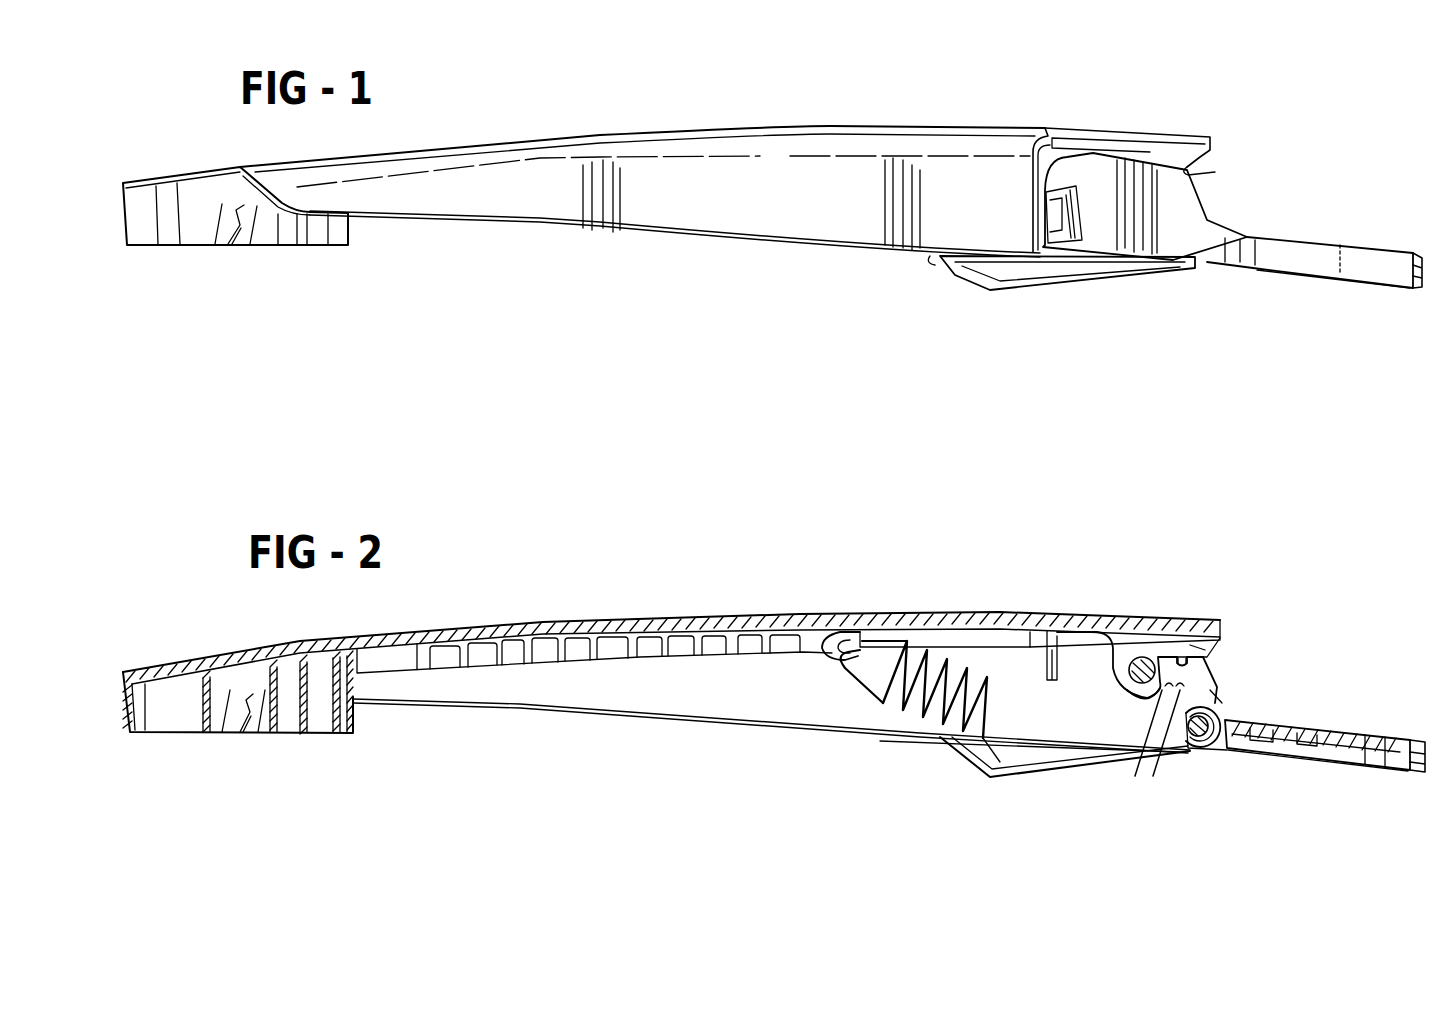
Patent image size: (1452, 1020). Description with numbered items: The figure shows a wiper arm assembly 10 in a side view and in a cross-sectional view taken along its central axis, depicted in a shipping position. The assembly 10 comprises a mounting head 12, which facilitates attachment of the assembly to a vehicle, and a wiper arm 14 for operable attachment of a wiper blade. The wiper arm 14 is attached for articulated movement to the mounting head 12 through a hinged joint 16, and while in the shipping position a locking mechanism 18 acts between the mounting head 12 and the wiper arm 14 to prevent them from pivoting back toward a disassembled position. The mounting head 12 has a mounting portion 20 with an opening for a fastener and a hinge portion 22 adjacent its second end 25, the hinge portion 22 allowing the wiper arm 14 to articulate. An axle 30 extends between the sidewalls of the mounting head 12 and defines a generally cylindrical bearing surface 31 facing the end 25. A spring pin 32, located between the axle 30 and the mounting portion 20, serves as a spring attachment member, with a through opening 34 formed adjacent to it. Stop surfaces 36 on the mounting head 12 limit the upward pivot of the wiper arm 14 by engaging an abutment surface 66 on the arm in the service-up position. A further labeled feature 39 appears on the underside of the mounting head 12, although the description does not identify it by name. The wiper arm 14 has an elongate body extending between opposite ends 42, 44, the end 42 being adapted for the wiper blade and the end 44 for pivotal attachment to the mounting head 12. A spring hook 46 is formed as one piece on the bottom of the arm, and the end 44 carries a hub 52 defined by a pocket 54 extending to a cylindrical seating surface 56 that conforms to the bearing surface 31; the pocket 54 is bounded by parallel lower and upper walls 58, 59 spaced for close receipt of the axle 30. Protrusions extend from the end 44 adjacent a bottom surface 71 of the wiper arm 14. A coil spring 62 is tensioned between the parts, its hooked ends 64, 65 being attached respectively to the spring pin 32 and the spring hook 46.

In FIG. 1, the wiper arm assembly 10 is at (933, 82).
In FIG. 2, the wiper arm assembly 10 is at (836, 566).
In FIG. 1, the mounting head 12 is at (1412, 254).
In FIG. 2, the mounting head 12 is at (1420, 740).
In FIG. 1, the wiper arm 14 is at (826, 125).
In FIG. 2, the wiper arm 14 is at (720, 621).
In FIG. 1, the hinged joint 16 is at (1090, 122).
In FIG. 2, the hinged joint 16 is at (1160, 600).
In FIG. 2, the locking mechanism 18 is at (1223, 745).
In FIG. 1, the mounting portion 20 is at (1360, 252).
In FIG. 2, the mounting portion 20 is at (1378, 722).
In FIG. 1, the hinge portion 22 is at (1208, 200).
In FIG. 2, the hinge portion 22 is at (1207, 666).
In FIG. 1, the second end 25 is at (1045, 210).
In FIG. 2, the axle 30 is at (1182, 656).
In FIG. 2, the bearing surface 31 is at (1125, 686).
In FIG. 2, the spring pin 32 is at (1187, 718).
In FIG. 2, the through opening 34 is at (1200, 750).
In FIG. 2, the stop surfaces 36 is at (1210, 686).
In FIG. 1, the arm underside 39 is at (1278, 272).
In FIG. 2, the arm underside 39 is at (1265, 756).
In FIG. 1, the end 42 is at (152, 182).
In FIG. 2, the end 42 is at (166, 668).
In FIG. 1, the end 44 is at (1205, 128).
In FIG. 2, the end 44 is at (1212, 617).
In FIG. 2, the spring hook 46 is at (828, 636).
In FIG. 2, the hub 52 is at (1213, 655).
In FIG. 2, the pocket 54 is at (1181, 688).
In FIG. 2, the seating surface 56 is at (1140, 658).
In FIG. 2, the lower wall 58 is at (1167, 688).
In FIG. 2, the upper wall 59 is at (1190, 664).
In FIG. 1, the coil spring 62 is at (1015, 292).
In FIG. 2, the coil spring 62 is at (985, 773).
In FIG. 2, the end 64 is at (1212, 712).
In FIG. 2, the end 65 is at (832, 668).
In FIG. 1, the abutment surface 66 is at (1192, 167).
In FIG. 1, the bottom surface 71 is at (1092, 262).
In FIG. 2, the bottom surface 71 is at (1075, 750).